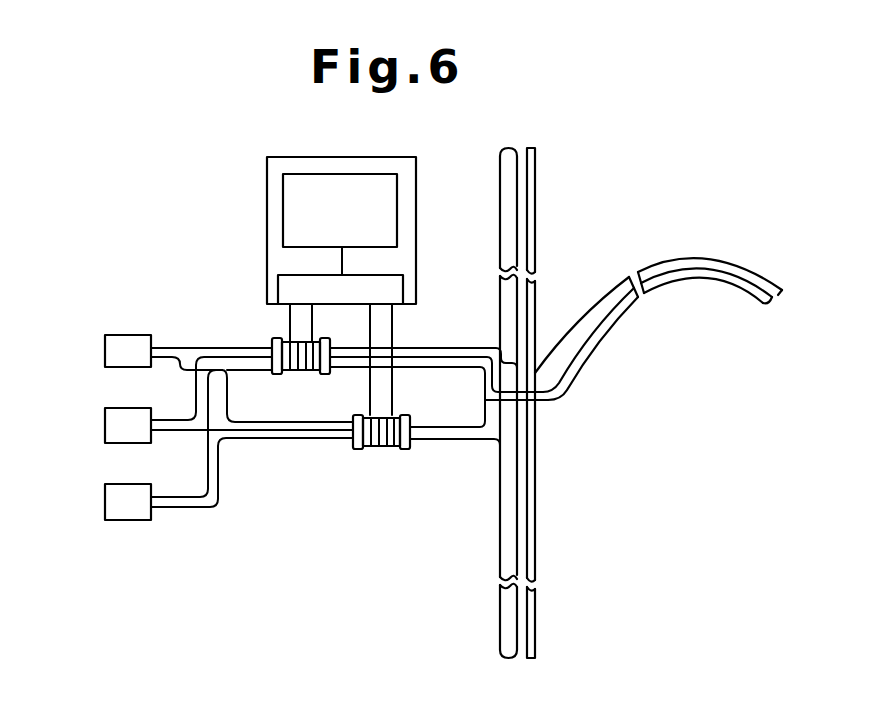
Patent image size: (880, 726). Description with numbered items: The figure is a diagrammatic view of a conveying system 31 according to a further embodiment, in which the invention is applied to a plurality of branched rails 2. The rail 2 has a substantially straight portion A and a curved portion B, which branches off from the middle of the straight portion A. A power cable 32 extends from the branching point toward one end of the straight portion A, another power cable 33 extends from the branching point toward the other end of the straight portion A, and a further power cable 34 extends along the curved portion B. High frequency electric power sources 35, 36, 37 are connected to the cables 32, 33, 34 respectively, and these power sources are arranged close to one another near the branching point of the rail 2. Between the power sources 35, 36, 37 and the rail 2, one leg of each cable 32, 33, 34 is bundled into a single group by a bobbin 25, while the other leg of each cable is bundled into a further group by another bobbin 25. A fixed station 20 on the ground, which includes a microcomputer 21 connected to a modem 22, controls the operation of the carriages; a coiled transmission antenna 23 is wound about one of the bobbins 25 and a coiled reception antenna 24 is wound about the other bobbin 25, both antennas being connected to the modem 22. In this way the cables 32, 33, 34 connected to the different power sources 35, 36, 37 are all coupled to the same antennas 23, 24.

The rail 2 is at (538, 233).
The fixed station 20 is at (267, 200).
The microcomputer 21 is at (360, 221).
The modem 22 is at (403, 285).
The transmission antenna 23 is at (293, 371).
The reception antenna 24 is at (372, 452).
The bobbin 25 is at (330, 374).
The conveying system 31 is at (634, 483).
The power cable 32 is at (500, 206).
The power cable 33 is at (500, 546).
The power cable 34 is at (596, 322).
The high frequency electric power source 35 is at (105, 352).
The high frequency electric power source 36 is at (105, 427).
The high frequency electric power source 37 is at (105, 500).
The straight portion A is at (536, 519).
The curved portion B is at (695, 250).